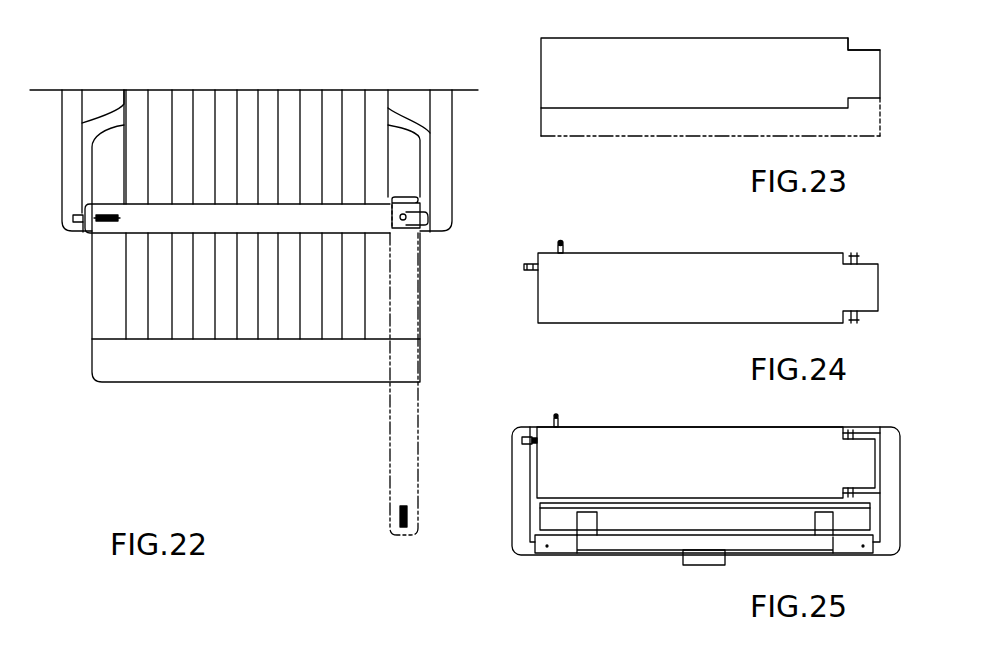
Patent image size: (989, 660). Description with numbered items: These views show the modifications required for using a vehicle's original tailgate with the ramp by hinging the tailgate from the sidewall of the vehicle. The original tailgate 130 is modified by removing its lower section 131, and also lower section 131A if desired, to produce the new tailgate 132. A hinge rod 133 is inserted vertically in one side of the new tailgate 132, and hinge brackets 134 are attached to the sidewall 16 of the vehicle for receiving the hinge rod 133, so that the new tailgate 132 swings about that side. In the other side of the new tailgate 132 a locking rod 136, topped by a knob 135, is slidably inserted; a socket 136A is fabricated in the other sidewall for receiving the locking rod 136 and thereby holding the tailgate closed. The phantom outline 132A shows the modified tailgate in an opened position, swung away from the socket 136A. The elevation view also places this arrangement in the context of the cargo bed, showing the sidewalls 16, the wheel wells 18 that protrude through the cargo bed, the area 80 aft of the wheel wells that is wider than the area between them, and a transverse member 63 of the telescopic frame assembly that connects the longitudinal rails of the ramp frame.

In FIG. 22, the sidewall 16 is at (440, 217).
In FIG. 25, the sidewall 16 is at (523, 537).
In FIG. 22, the wheel well 18 is at (423, 103).
In FIG. 22, the transverse member 63 is at (277, 368).
In FIG. 25, the transverse member 63 is at (703, 507).
In FIG. 22, the area aft of the wheel wells 80 is at (107, 332).
In FIG. 25, the area aft of the wheel wells 80 is at (572, 523).
In FIG. 23, the original tailgate 130 is at (728, 90).
In FIG. 23, the lower section 131 is at (727, 134).
In FIG. 23, the lower section 131A is at (867, 43).
In FIG. 22, the new tailgate 132 is at (268, 229).
In FIG. 24, the new tailgate 132 is at (728, 300).
In FIG. 25, the new tailgate 132 is at (728, 480).
In FIG. 22, the modified tailgate in opened position 132A is at (403, 457).
In FIG. 24, the hinge rod 133 is at (853, 251).
In FIG. 22, the hinge bracket 134 is at (427, 232).
In FIG. 25, the hinge bracket 134 is at (865, 425).
In FIG. 22, the knob 135 is at (104, 218).
In FIG. 24, the knob 135 is at (561, 242).
In FIG. 24, the locking rod 136 is at (528, 268).
In FIG. 22, the socket 136A is at (73, 222).
In FIG. 25, the socket 136A is at (530, 433).